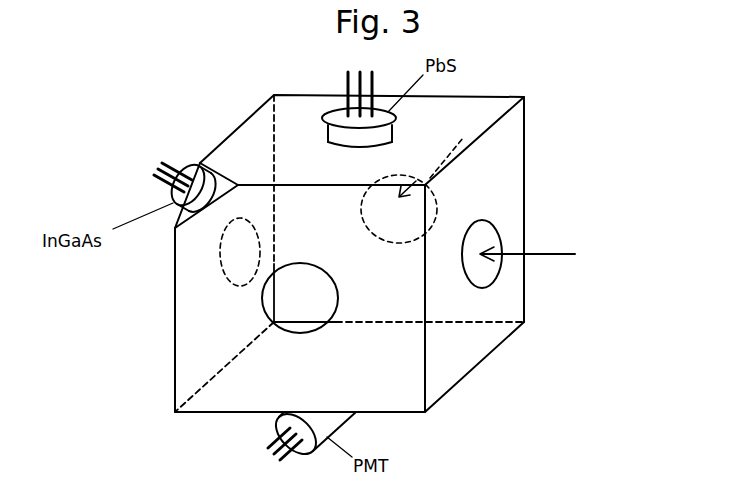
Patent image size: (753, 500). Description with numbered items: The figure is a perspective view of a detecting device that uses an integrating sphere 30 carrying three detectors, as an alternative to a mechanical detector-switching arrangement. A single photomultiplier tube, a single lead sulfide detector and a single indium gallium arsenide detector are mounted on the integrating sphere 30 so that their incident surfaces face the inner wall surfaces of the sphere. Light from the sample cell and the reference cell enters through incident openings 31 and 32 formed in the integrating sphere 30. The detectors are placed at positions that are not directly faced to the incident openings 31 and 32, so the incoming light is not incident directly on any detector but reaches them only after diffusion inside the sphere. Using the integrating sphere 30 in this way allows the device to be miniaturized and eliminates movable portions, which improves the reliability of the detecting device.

The integrating sphere 30 is at (222, 136).
The incident opening 31 is at (492, 223).
The incident opening 32 is at (435, 197).